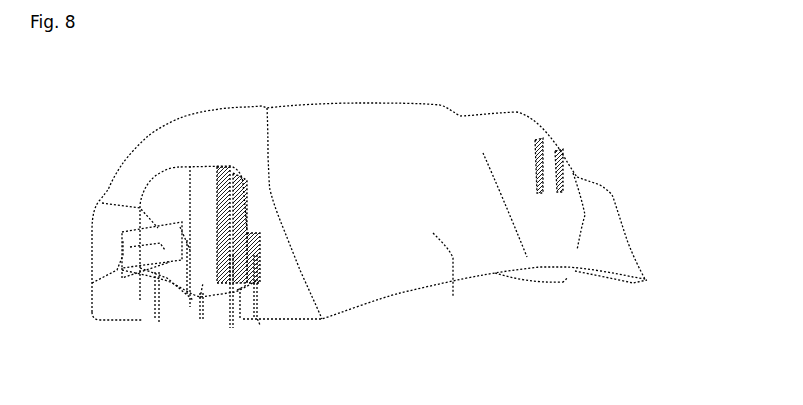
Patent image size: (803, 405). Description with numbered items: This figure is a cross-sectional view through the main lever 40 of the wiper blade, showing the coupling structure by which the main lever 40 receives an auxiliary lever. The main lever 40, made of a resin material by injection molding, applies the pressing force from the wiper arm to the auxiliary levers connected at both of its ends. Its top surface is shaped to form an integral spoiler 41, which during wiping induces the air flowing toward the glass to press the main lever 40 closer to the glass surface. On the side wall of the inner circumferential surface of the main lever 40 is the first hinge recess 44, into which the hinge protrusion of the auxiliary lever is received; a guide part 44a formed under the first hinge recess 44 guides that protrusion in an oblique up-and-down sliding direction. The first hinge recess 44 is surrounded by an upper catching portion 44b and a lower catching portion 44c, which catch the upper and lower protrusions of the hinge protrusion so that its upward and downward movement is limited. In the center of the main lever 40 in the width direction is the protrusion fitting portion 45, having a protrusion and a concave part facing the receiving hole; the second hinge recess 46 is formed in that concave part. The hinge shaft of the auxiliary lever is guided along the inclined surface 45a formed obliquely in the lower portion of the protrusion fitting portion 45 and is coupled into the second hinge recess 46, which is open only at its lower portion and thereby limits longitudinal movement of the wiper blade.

The main lever 40 is at (450, 97).
The spoiler 41 is at (453, 297).
The first hinge recess 44 is at (92, 283).
The guide part 44a is at (162, 297).
The upper catching portion 44b is at (102, 203).
The lower catching portion 44c is at (140, 320).
The protrusion fitting portion 45 is at (200, 320).
The inclined surface 45a is at (230, 328).
The second hinge recess 46 is at (260, 323).